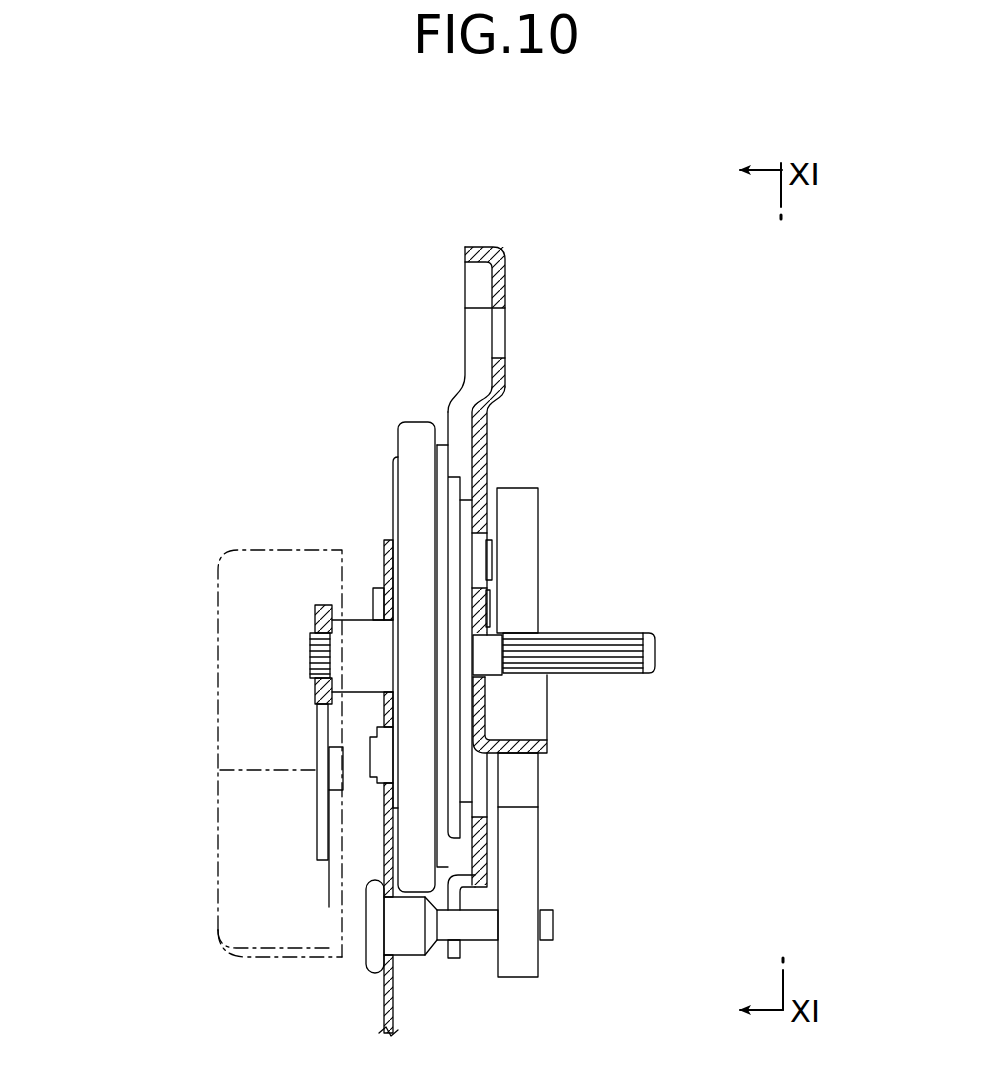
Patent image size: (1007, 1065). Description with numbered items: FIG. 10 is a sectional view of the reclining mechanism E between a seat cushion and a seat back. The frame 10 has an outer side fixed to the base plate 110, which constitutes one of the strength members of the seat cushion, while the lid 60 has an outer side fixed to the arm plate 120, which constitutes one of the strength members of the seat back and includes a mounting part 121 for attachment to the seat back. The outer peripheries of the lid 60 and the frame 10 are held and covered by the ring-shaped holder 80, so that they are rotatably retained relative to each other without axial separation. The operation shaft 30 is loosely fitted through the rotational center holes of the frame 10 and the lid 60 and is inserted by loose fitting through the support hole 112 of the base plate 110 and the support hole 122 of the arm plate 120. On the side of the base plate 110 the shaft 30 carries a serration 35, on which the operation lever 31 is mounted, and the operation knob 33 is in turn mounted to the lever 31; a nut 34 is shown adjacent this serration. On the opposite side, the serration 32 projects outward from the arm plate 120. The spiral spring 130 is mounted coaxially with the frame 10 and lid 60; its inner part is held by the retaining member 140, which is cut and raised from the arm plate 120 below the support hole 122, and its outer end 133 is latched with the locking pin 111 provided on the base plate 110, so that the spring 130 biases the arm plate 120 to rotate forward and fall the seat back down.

The frame 10 is at (385, 460).
The operation shaft 30 is at (657, 652).
The operation lever 31 is at (317, 803).
The serration 32 is at (622, 632).
The operation knob 33 is at (218, 900).
The nut 34 is at (308, 633).
The serration 35 is at (308, 655).
The lid 60 is at (470, 478).
The ring-shaped holder 80 is at (418, 855).
The base plate 110 is at (383, 1007).
The locking pin 111 is at (555, 923).
The support hole 112 is at (387, 687).
The arm plate 120 is at (507, 288).
The mounting part 121 is at (507, 373).
The support hole 122 is at (480, 623).
The spiral spring 130 is at (542, 520).
The outer end 133 is at (450, 960).
The retaining member 140 is at (550, 753).
The assembly E is at (408, 377).